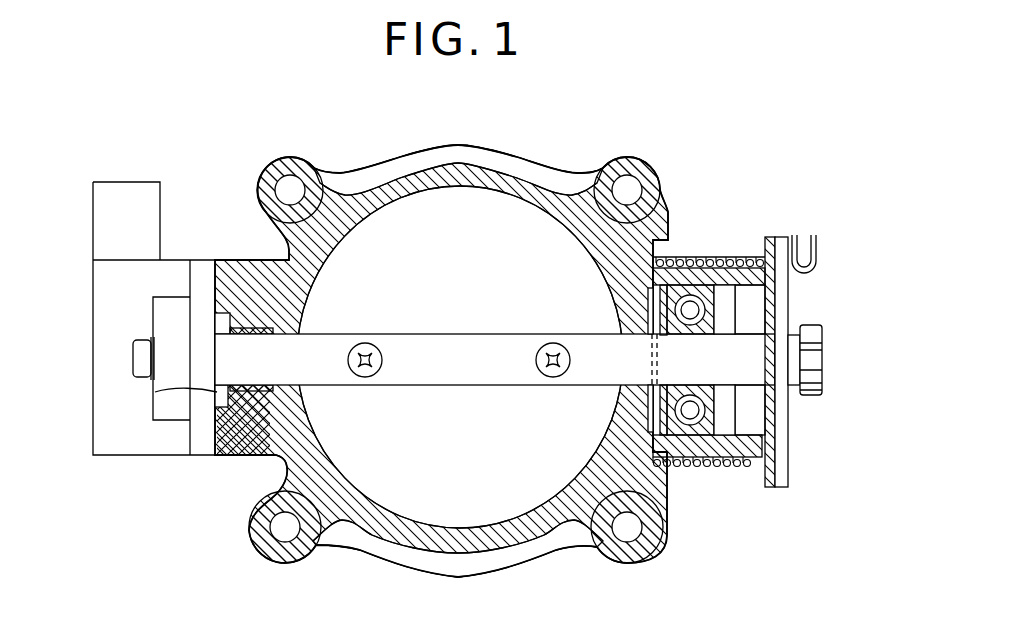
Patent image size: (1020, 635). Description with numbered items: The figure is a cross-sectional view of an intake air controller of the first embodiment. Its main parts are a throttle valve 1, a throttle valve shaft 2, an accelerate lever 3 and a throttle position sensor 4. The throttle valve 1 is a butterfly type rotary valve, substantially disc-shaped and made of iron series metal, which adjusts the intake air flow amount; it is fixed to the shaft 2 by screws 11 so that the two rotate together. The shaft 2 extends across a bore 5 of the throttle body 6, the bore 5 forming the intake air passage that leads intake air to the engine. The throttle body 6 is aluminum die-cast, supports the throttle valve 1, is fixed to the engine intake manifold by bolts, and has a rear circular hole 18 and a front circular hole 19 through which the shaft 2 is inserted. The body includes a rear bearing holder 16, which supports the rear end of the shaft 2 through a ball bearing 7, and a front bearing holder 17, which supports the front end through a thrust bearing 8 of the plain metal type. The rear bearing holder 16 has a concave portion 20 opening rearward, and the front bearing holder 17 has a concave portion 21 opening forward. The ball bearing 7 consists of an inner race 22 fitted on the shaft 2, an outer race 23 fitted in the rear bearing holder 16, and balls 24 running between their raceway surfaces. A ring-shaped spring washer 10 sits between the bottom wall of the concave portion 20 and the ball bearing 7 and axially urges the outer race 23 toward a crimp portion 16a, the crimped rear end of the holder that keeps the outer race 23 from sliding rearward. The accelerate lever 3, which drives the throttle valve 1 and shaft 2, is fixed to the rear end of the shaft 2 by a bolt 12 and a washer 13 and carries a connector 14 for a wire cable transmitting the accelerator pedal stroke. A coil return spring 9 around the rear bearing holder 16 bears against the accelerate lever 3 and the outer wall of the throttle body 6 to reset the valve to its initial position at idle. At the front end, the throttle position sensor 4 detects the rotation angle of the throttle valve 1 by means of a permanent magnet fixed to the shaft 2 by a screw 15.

The throttle valve 1 is at (441, 334).
The throttle valve shaft 2 is at (290, 368).
The accelerate lever 3 is at (780, 440).
The throttle position sensor 4 is at (115, 297).
The bore 5 is at (547, 245).
The throttle body 6 is at (495, 176).
The ball bearing 7 is at (707, 290).
The thrust bearing 8 is at (245, 320).
The coil return spring 9 is at (670, 285).
The spring washer 10 is at (650, 262).
The screws 11 is at (362, 380).
The bolt 12 is at (812, 365).
The washer 13 is at (796, 338).
The connector 14 is at (817, 242).
The screw 15 is at (133, 357).
The rear bearing holder 16 is at (705, 447).
The crimp portion 16a is at (735, 430).
The front bearing holder 17 is at (215, 457).
The rear circular hole 18 is at (608, 398).
The front circular hole 19 is at (262, 245).
The concave portion 20 is at (727, 303).
The concave portion 21 is at (150, 392).
The inner race 22 is at (745, 400).
The outer race 23 is at (735, 435).
The balls 24 is at (683, 420).